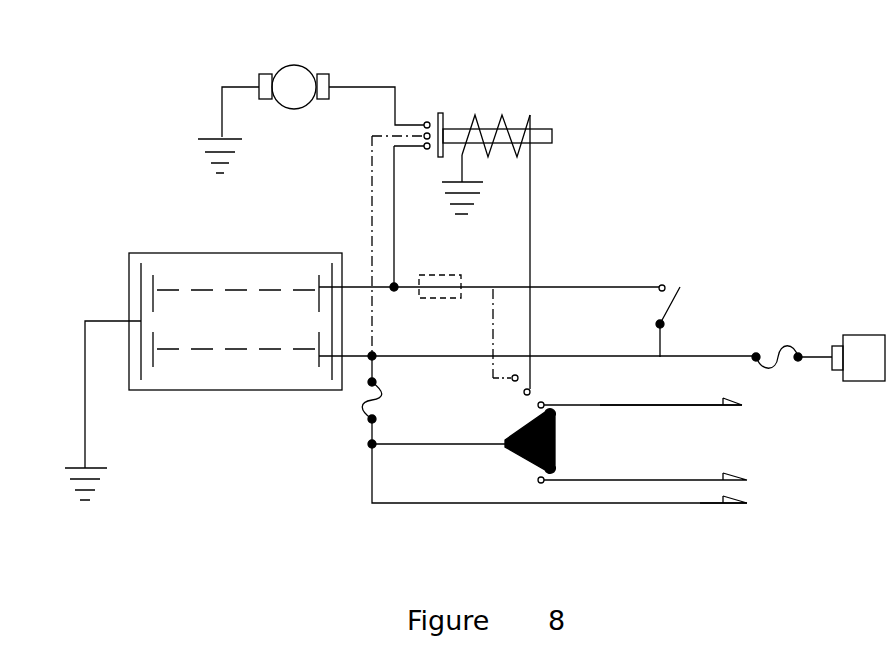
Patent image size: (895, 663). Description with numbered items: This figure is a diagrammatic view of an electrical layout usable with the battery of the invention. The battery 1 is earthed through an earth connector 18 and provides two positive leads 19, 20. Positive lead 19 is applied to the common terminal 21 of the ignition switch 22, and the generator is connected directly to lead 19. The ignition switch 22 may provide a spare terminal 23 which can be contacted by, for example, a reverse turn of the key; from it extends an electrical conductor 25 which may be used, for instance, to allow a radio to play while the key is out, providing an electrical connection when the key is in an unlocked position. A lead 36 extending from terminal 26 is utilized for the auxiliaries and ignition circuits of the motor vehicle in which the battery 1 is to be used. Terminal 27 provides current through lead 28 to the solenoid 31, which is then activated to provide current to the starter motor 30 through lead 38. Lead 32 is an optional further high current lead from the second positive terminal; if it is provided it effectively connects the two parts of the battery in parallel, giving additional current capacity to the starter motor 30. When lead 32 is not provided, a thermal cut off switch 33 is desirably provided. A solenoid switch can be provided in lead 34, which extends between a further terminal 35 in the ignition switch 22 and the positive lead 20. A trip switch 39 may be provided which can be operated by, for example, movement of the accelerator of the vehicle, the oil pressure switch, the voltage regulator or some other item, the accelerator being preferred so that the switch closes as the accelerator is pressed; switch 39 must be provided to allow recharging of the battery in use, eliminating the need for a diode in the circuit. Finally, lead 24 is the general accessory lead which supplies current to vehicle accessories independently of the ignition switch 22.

The battery 1 is at (229, 400).
The earth connector 18 is at (76, 405).
The positive lead 19 is at (353, 360).
The positive lead 20 is at (361, 282).
The common terminal 21 is at (487, 449).
The ignition switch 22 is at (562, 426).
The spare terminal 23 is at (536, 485).
The general accessory lead 24 is at (735, 513).
The electrical conductor 25 is at (682, 489).
The terminal 26 is at (548, 402).
The terminal 27 is at (533, 380).
The lead 28 is at (540, 177).
The starter motor 30 is at (313, 59).
The solenoid 31 is at (537, 121).
The lead 32 is at (370, 200).
The thermal cut off switch 33 is at (445, 268).
The lead 34 is at (489, 330).
The further terminal 35 is at (509, 386).
The lead 36 is at (645, 402).
The lead 38 is at (373, 79).
The trip switch 39 is at (692, 294).